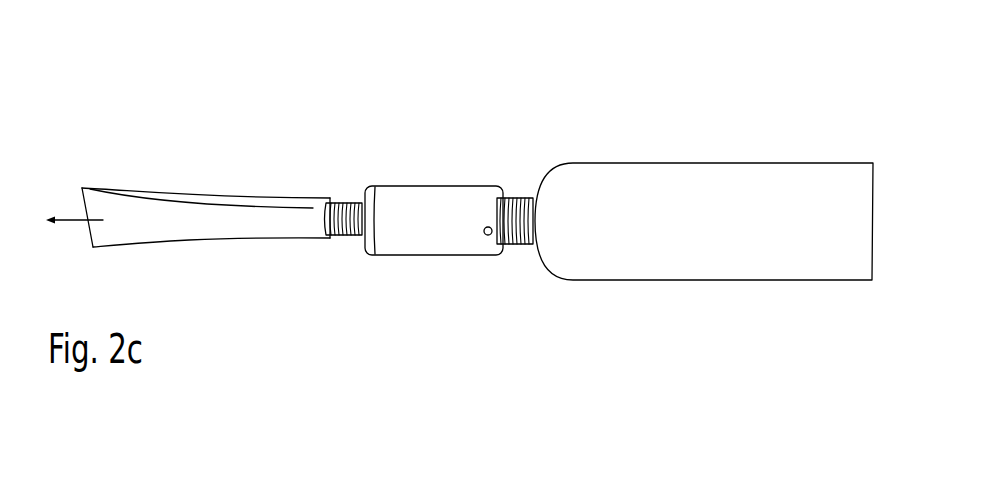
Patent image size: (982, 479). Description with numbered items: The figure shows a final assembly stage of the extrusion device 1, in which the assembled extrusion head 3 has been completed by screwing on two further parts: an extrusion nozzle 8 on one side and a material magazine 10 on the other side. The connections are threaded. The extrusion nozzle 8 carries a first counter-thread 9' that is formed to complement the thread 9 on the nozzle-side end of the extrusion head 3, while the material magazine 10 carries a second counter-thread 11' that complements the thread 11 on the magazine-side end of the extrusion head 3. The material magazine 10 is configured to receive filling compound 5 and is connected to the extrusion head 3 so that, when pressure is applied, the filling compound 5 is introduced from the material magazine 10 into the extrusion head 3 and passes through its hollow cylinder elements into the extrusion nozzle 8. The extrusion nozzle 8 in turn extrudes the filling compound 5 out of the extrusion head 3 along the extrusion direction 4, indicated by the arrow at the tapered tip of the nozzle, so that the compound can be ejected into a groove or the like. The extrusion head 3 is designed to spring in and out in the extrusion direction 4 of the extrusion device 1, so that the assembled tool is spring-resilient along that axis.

The extrusion device 1 is at (166, 90).
The extrusion head 3 is at (391, 167).
The extrusion direction 4 is at (93, 218).
The filling compound 5 is at (681, 240).
The extrusion nozzle 8 is at (230, 189).
The thread 9 is at (351, 185).
The first counter-thread 9' is at (330, 184).
The material magazine 10 is at (722, 156).
The thread 11 is at (519, 186).
The second counter-thread 11' is at (542, 148).